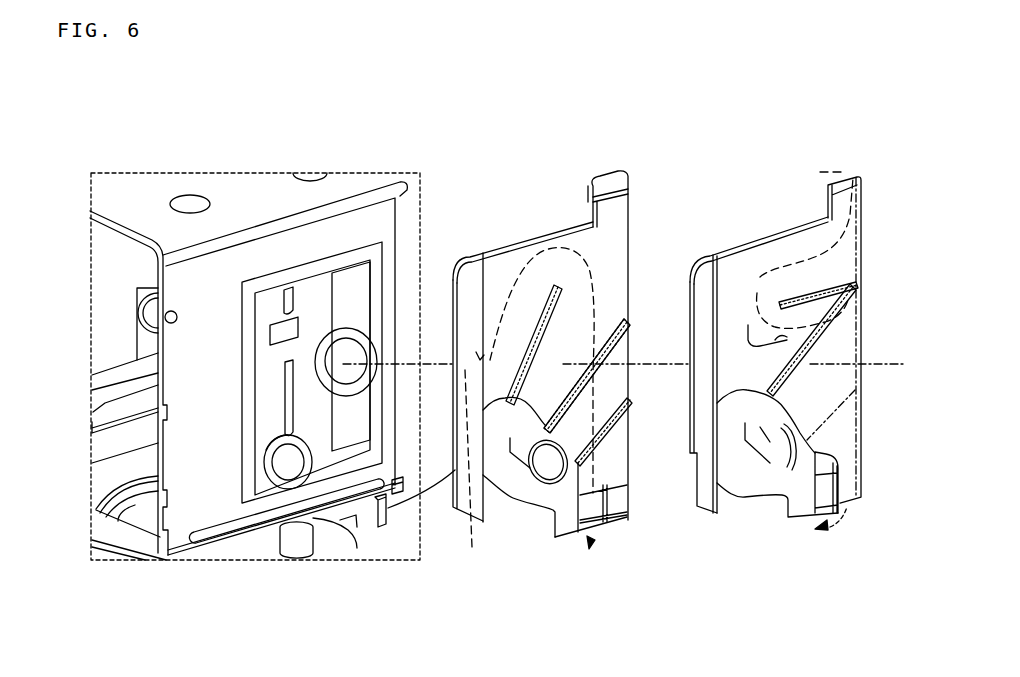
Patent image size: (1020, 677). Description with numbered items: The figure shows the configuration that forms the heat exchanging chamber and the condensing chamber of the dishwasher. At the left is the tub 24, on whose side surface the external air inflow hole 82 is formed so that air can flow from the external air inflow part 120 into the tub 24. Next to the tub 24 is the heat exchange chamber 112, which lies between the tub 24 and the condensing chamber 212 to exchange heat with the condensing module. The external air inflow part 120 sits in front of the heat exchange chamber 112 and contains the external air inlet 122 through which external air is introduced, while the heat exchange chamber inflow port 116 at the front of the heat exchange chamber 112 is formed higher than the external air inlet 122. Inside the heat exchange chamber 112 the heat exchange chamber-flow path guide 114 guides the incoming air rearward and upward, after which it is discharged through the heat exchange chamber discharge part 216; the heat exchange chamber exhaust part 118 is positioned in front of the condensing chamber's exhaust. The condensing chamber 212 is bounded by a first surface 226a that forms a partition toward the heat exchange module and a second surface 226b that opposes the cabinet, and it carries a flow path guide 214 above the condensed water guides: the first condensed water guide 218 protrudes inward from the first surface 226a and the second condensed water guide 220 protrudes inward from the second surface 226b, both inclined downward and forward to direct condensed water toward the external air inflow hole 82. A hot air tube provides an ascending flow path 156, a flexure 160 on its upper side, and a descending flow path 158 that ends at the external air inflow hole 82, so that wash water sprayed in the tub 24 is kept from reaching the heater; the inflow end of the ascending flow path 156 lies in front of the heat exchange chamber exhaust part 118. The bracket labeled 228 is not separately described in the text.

The tub 24 is at (357, 228).
The external air inflow hole 82 is at (285, 464).
The external air inlet 122 is at (357, 520).
The heat exchange chamber 112 is at (607, 256).
The heat exchange chamber-flow path guide 114 is at (540, 326).
The heat exchange chamber inflow port 116 is at (482, 357).
The heat exchange chamber exhaust part 118 is at (612, 505).
The external air inflow part 120 is at (457, 508).
The second condensed water guide 220 is at (614, 336).
The first surface 226a is at (607, 325).
The condensing chamber 212 is at (852, 236).
The flow path guide 214 is at (857, 285).
The heat exchange chamber discharge part 216 is at (847, 333).
The first condensed water guide 218 is at (823, 340).
The second surface 226b is at (847, 335).
The second bracket 228 is at (847, 487).
The ascending flow path 156 is at (752, 467).
The descending flow path 158 is at (745, 430).
The flexure 160 is at (697, 507).